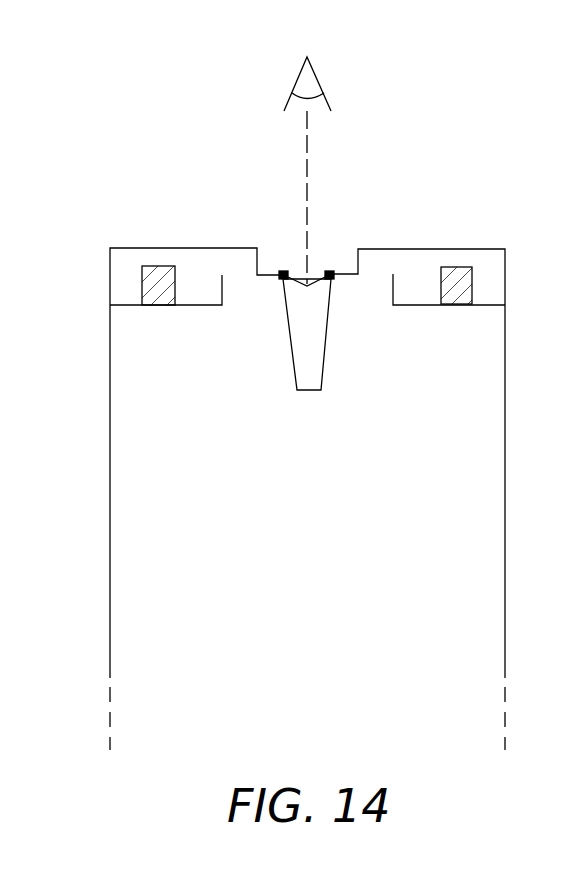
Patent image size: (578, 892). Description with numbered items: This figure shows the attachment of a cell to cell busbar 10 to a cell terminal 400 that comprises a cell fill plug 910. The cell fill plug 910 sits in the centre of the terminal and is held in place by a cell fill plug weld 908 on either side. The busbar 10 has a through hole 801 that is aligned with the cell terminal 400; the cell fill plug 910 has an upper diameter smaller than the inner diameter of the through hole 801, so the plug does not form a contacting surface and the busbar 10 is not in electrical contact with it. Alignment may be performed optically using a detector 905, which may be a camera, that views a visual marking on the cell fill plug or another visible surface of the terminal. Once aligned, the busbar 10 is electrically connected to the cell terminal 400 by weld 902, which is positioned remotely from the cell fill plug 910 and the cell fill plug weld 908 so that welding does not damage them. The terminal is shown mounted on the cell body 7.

The body 7 is at (506, 381).
The busbar 10 is at (508, 261).
The weld 902 is at (158, 266).
The cell fill plug weld 908 is at (282, 280).
The cell fill plug 910 is at (308, 392).
The detector 905 is at (327, 72).
The through hole 801 is at (275, 235).
The cell terminal 400 is at (336, 241).